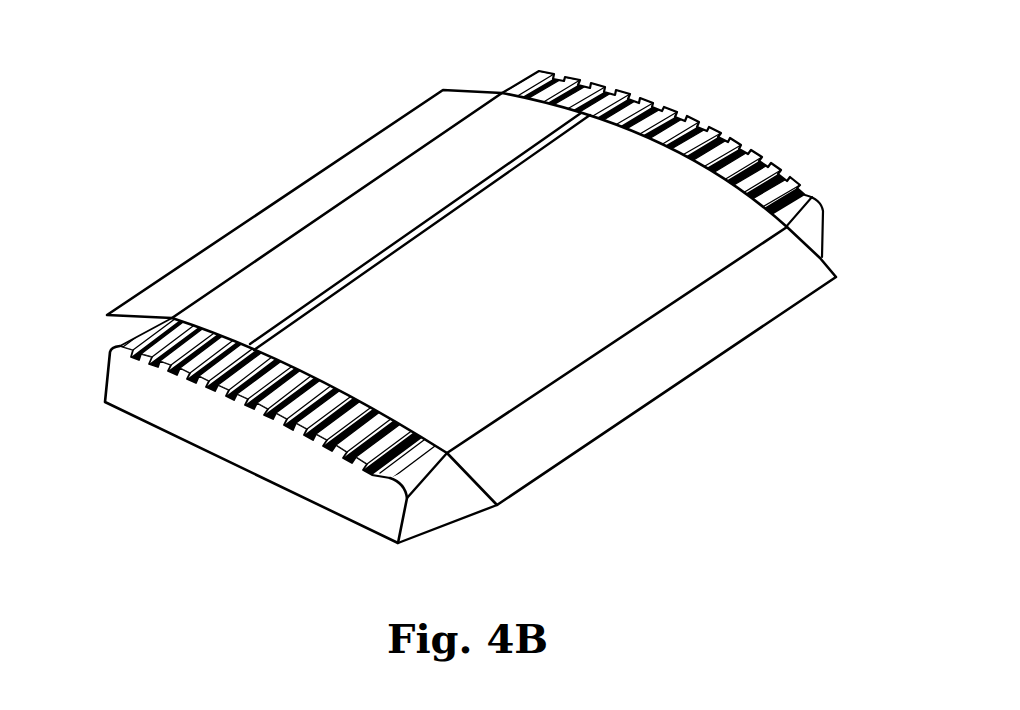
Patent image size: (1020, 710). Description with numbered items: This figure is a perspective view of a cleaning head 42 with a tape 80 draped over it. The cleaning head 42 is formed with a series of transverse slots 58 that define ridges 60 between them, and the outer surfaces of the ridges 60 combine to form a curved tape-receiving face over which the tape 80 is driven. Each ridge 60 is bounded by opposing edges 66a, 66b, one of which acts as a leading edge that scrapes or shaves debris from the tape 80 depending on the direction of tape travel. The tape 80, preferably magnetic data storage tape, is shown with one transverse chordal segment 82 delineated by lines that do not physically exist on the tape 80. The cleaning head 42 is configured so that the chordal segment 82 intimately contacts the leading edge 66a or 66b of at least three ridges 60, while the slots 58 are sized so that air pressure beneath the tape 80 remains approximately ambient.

The cleaning head 42 is at (713, 125).
The slots 58 is at (238, 395).
The ridges 60 is at (327, 435).
The edge 66a is at (158, 346).
The edge 66b is at (181, 362).
The tape 80 is at (790, 280).
The transverse chordal segment 82 is at (502, 188).